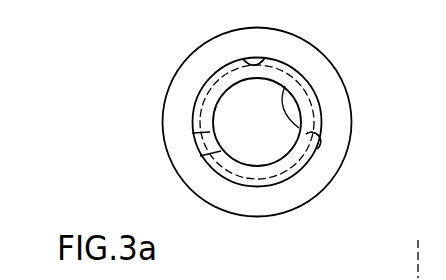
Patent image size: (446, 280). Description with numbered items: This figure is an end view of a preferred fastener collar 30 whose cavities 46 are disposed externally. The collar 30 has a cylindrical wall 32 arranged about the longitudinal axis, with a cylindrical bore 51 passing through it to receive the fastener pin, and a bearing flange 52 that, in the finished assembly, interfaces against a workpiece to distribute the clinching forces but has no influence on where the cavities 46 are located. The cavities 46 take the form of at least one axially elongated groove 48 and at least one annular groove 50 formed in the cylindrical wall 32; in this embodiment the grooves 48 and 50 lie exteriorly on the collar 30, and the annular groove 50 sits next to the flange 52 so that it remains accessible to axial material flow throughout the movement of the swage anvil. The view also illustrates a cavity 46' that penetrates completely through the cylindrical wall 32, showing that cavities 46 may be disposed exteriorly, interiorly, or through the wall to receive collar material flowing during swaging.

The fastener collar 30 is at (108, 62).
The cylindrical wall 32 is at (212, 87).
The cavities 46 is at (300, 81).
The cavity 46' is at (168, 166).
The axially elongated groove 48 is at (257, 58).
The annular groove 50 is at (296, 77).
The cylindrical bore 51 is at (283, 119).
The bearing flange 52 is at (333, 87).